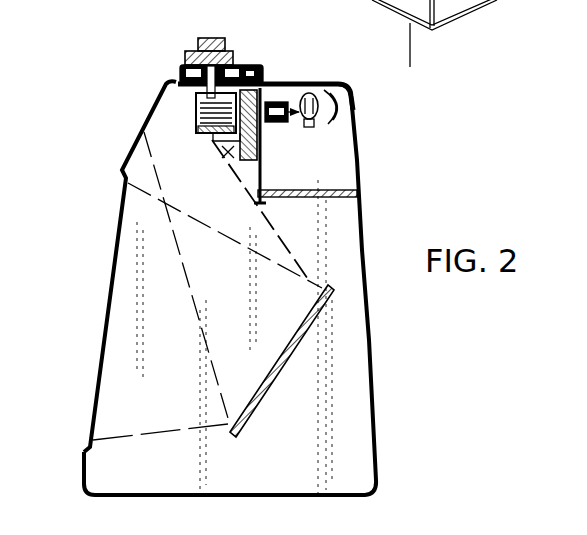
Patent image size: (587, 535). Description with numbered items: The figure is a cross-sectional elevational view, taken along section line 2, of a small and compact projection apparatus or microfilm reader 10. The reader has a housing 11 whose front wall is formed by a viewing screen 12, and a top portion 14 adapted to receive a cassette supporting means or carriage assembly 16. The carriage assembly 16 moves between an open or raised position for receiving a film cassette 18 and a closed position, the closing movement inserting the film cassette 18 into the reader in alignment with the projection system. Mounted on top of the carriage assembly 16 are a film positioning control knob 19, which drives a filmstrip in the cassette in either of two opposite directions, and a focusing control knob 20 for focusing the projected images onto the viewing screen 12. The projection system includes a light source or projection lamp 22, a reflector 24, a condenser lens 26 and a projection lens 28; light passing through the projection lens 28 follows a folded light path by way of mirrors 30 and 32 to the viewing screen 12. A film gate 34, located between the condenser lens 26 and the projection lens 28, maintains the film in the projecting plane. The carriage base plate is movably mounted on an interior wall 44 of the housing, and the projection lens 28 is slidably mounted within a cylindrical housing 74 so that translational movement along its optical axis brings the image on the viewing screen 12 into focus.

The section line of FIG. 2 is at (388, 53).
The microfilm reader 10 is at (381, 289).
The housing 11 is at (360, 222).
The viewing screen 12 is at (103, 318).
The top portion 14 is at (291, 82).
The carriage assembly 16 is at (178, 52).
The film cassette 18 is at (222, 151).
The film positioning control knob 19 is at (239, 57).
The focusing control knob 20 is at (212, 38).
The projection lamp 22 is at (310, 130).
The reflector 24 is at (333, 118).
The condenser lens 26 is at (275, 124).
The projection lens 28 is at (167, 121).
The mirror 30 is at (197, 121).
The mirror 32 is at (252, 405).
The film gate 34 is at (233, 158).
The interior wall 44 is at (318, 197).
The cylindrical housing 74 is at (205, 129).